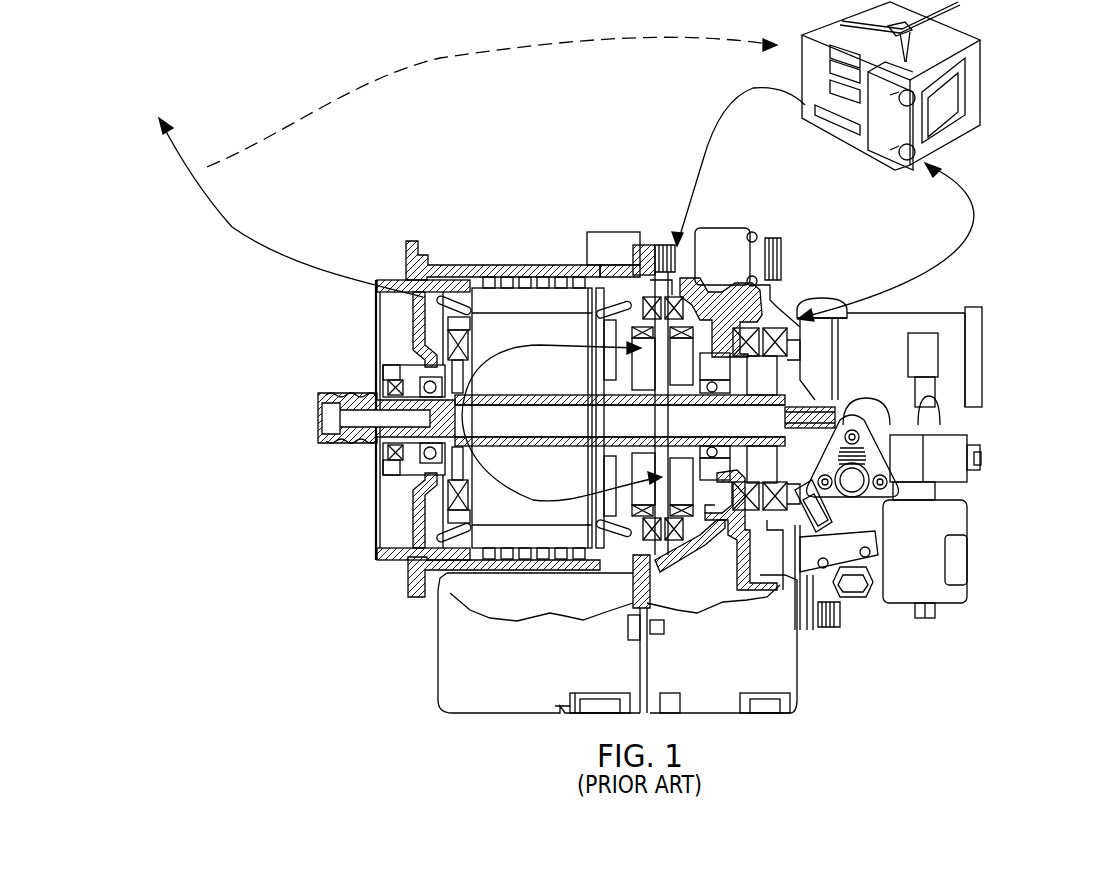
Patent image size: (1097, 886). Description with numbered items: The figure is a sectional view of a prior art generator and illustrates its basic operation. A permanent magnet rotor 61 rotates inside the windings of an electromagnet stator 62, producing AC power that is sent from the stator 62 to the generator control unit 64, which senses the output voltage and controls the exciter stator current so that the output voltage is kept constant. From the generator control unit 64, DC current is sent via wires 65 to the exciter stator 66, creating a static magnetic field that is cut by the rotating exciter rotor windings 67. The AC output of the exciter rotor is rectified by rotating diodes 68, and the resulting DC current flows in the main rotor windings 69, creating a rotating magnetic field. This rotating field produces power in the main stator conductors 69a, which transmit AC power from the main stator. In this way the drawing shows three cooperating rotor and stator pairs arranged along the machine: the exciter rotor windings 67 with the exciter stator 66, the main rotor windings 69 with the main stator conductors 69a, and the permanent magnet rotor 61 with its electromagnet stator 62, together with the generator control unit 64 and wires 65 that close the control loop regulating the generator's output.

The permanent magnet rotor 61 is at (787, 377).
The electromagnet stator 62 is at (800, 347).
The generator control unit 64 is at (985, 86).
The wires 65 is at (718, 112).
The exciter stator 66 is at (628, 295).
The exciter rotor windings 67 is at (633, 522).
The rotating diodes 68 is at (704, 518).
The main rotor windings 69 is at (520, 343).
The main stator conductors 69a is at (426, 535).